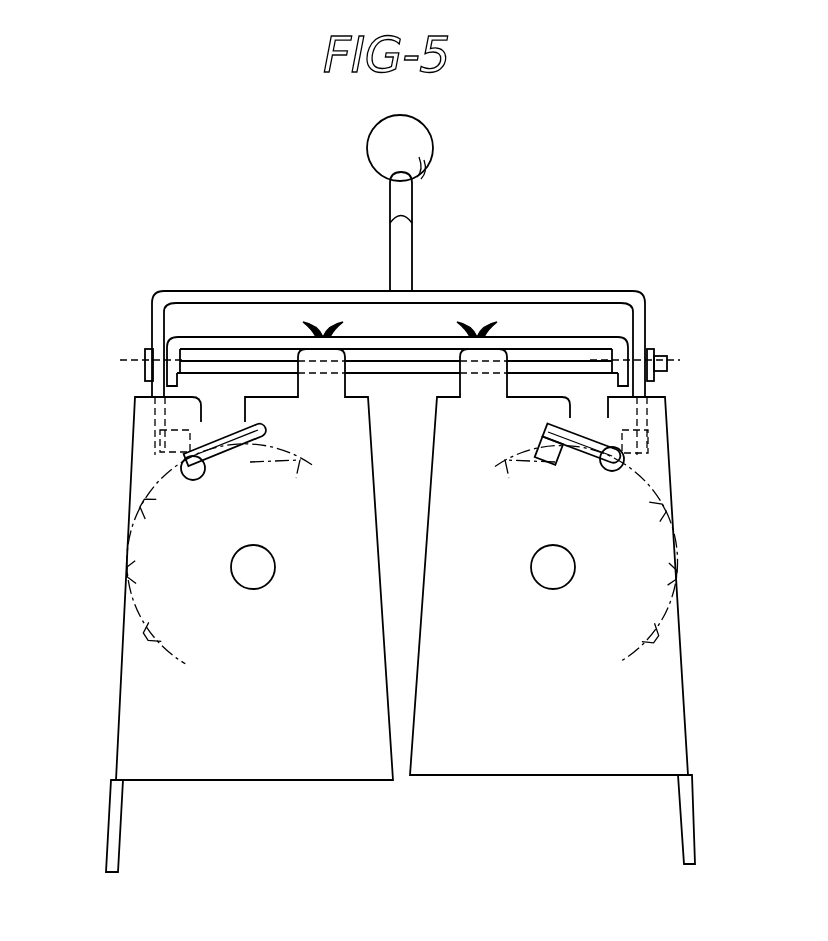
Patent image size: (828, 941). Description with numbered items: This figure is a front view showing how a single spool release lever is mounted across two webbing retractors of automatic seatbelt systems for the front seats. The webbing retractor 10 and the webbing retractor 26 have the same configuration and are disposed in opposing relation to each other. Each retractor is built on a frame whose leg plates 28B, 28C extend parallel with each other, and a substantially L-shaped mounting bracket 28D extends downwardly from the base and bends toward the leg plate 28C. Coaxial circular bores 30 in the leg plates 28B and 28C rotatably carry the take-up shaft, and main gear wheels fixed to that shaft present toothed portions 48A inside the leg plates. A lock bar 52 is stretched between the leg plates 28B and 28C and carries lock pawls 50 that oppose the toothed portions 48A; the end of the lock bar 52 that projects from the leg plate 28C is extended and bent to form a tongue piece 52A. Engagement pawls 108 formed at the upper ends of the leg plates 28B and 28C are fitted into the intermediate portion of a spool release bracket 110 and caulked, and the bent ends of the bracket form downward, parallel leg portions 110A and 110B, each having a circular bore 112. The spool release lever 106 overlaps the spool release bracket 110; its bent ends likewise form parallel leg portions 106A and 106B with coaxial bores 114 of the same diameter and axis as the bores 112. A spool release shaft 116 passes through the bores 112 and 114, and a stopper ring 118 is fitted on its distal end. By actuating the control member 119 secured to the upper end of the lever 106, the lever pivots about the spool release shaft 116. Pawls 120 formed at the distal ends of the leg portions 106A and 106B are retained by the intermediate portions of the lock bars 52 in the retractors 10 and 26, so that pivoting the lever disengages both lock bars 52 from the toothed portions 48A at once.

The webbing retractor 10 is at (719, 342).
The webbing retractor 26 is at (80, 473).
The leg plate 28B is at (283, 775).
The leg plate 28C is at (547, 773).
The mounting bracket 28D is at (123, 838).
The bore 30 is at (265, 584).
The toothed portion 48A is at (166, 643).
The lock pawl 50 is at (181, 472).
The lock bar 52 is at (247, 423).
The tongue piece 52A is at (552, 468).
The spool release lever 106 is at (532, 289).
The leg portion 106A is at (157, 323).
The leg portion 106B is at (648, 318).
The engagement pawl 108 is at (334, 322).
The spool release bracket 110 is at (397, 332).
The leg portion 110A is at (178, 387).
The leg portion 110B is at (602, 382).
The bore 112 is at (186, 353).
The bore 114 is at (146, 364).
The spool release shaft 116 is at (256, 348).
The stopper ring 118 is at (662, 373).
The control member 119 is at (435, 153).
The pawl 120 is at (160, 438).